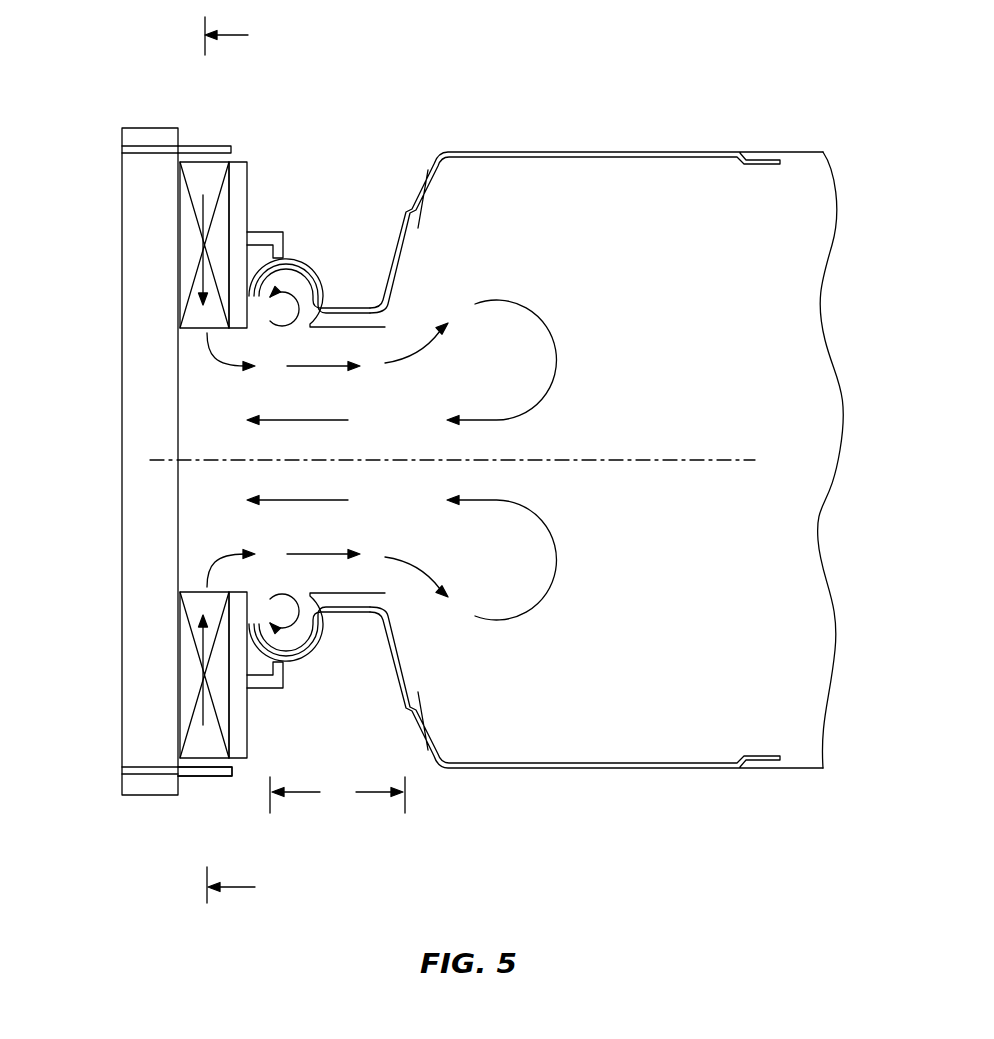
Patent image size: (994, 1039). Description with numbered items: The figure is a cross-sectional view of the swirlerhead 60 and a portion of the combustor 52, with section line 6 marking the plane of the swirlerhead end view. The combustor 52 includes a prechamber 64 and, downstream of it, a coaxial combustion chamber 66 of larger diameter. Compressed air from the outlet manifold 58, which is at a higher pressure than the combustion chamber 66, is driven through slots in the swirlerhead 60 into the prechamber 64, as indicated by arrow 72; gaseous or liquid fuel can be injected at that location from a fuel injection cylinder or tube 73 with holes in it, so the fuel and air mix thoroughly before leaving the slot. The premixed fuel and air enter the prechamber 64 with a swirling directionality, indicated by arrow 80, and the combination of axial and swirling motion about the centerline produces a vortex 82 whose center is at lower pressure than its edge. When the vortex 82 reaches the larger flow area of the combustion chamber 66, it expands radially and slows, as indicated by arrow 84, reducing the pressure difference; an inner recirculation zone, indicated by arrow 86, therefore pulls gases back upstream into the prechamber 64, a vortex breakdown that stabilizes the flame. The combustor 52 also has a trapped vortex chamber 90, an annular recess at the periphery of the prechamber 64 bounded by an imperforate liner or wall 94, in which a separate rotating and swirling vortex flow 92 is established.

The section line 6- 6 is at (238, 460).
The combustor 52 is at (549, 140).
The outlet manifold 58 is at (523, 44).
The swirlerhead 60 is at (118, 503).
The prechamber 64 is at (337, 795).
The combustion chamber 66 is at (697, 302).
The arrow indicating air flow into swirl slots 72 is at (201, 128).
The fuel injection cylinder or tube 73 is at (190, 780).
The arrow indicating swirling fuel/air mixture 80 is at (214, 563).
The vortex 82 is at (320, 553).
The expanded vortex 84 is at (428, 562).
The inner recirculation zone 86 is at (332, 498).
The trapped vortex chamber 90 is at (302, 297).
The annular processing vortex flow 92 is at (290, 288).
The imperforate liner or wall 94 is at (305, 652).